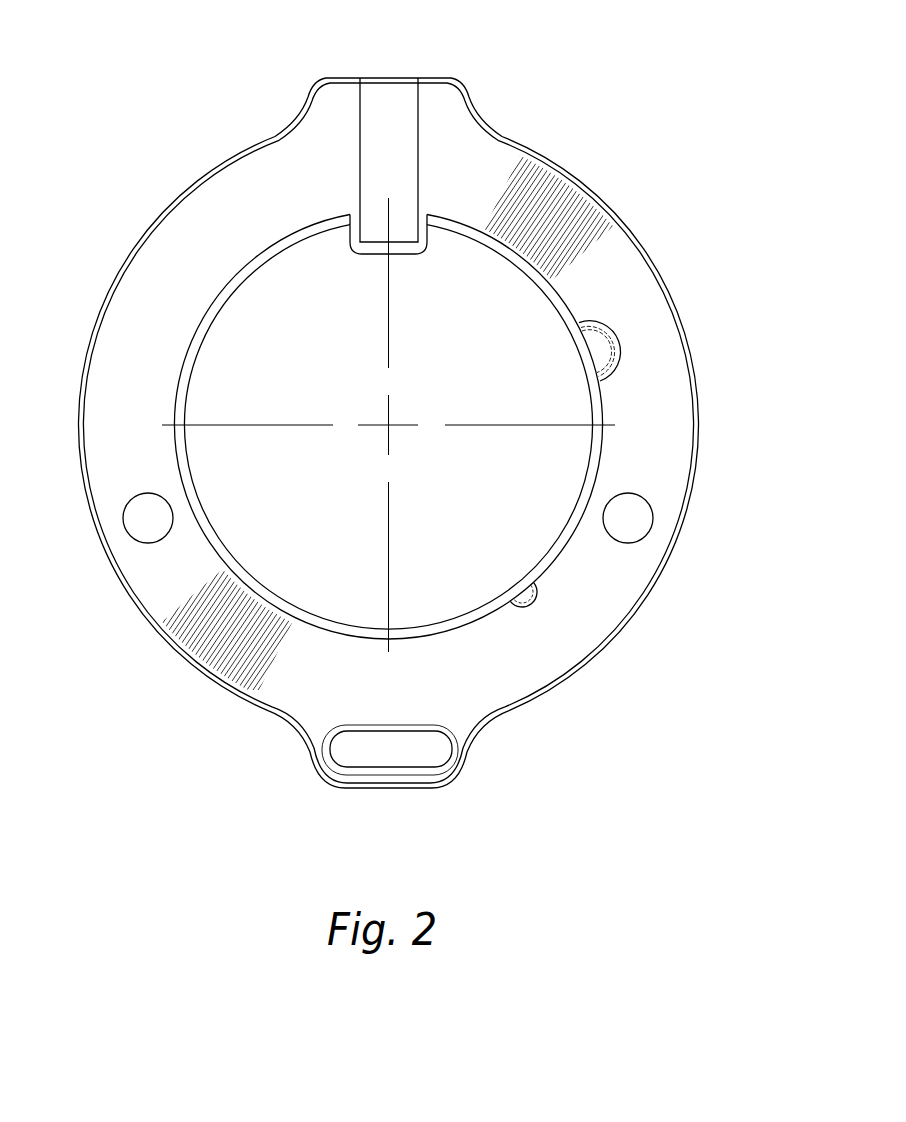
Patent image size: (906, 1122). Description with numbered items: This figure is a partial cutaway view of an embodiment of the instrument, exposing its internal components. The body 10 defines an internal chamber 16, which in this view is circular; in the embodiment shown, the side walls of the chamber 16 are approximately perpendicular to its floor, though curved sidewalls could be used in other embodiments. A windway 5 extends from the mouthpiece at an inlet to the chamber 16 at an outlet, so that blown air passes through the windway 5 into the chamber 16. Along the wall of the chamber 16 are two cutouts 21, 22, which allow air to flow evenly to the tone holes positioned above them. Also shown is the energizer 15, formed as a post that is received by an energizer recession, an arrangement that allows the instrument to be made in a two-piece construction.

The windway 5 is at (393, 130).
The body 10 is at (193, 233).
The energizer 15 is at (130, 536).
The internal chamber 16 is at (223, 357).
The cutout 21 is at (610, 335).
The cutout 22 is at (527, 598).